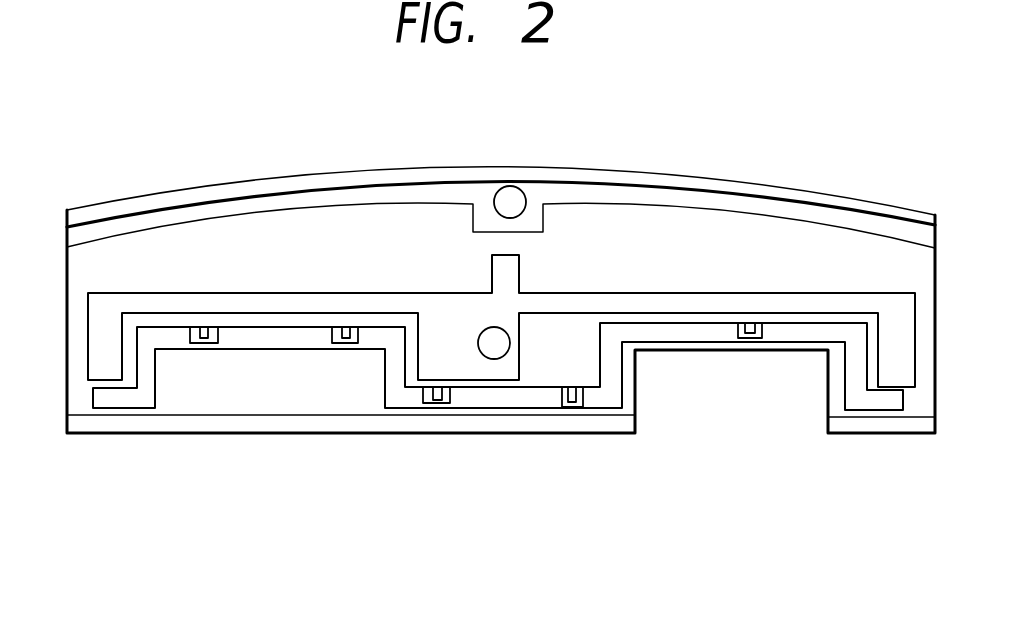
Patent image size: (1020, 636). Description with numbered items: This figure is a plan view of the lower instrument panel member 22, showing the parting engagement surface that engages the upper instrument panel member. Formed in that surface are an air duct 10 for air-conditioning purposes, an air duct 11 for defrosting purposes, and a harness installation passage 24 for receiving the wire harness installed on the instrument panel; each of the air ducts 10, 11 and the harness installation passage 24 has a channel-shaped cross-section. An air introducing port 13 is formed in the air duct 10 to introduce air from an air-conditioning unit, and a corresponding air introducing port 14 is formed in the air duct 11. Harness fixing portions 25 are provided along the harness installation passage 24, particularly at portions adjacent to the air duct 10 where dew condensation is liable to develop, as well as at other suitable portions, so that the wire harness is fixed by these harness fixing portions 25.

The air duct 10 is at (553, 307).
The air duct 11 is at (372, 192).
The air introducing port 13 is at (493, 352).
The air introducing port 14 is at (518, 201).
The lower instrument panel member 22 is at (792, 181).
The harness installation passage 24 is at (253, 342).
The harness fixing portions 25 is at (220, 333).